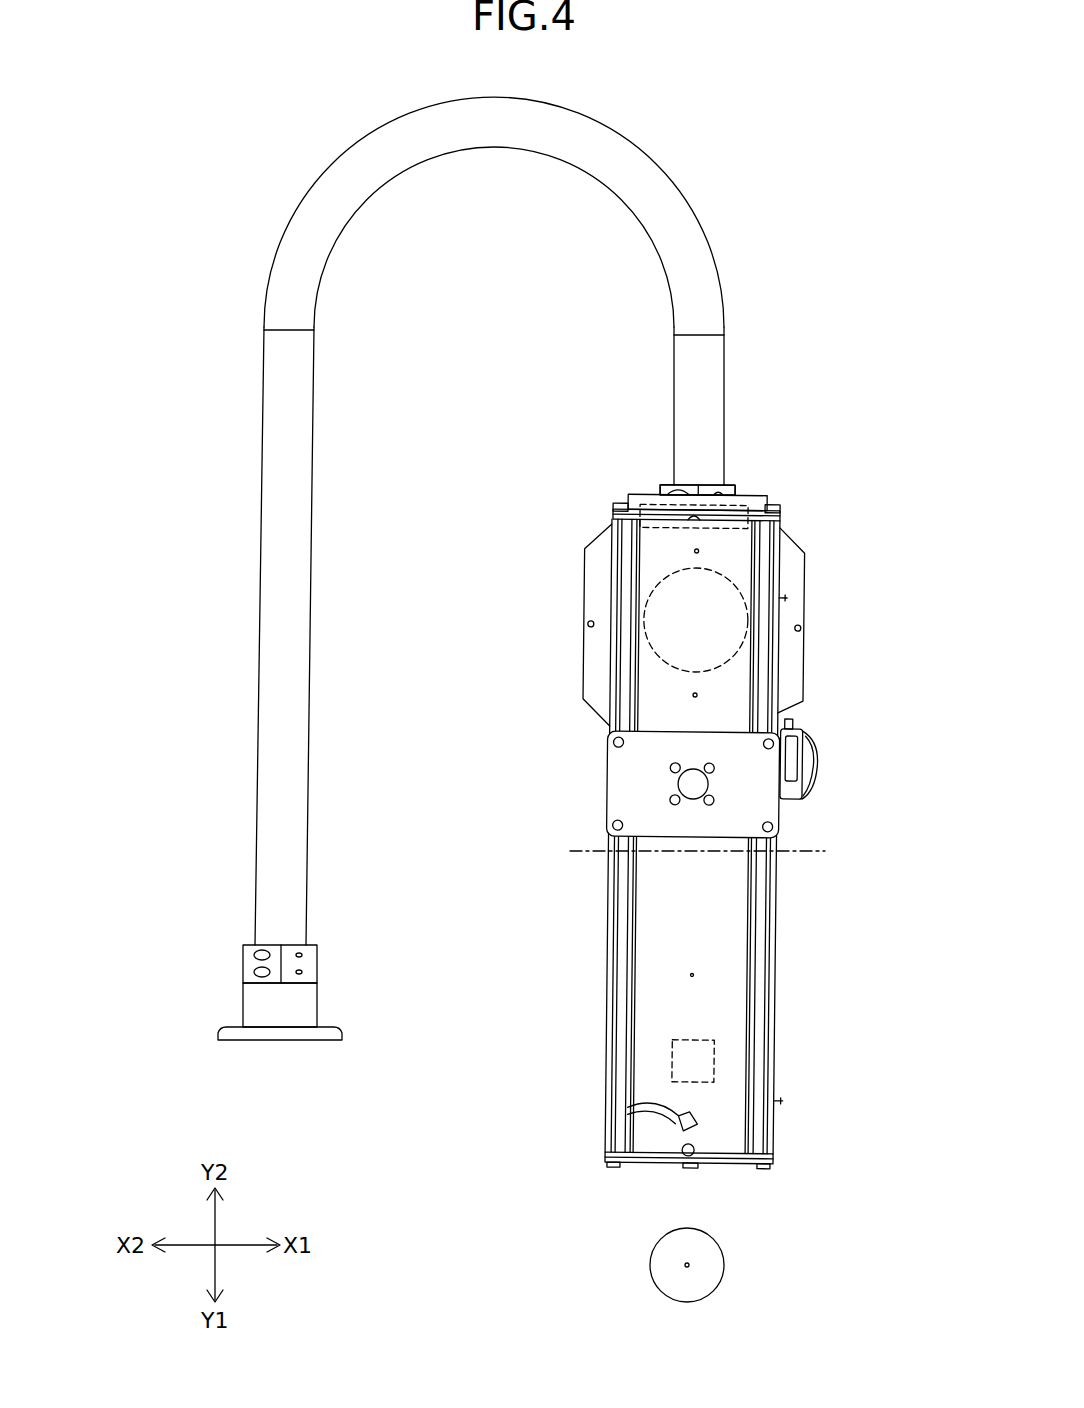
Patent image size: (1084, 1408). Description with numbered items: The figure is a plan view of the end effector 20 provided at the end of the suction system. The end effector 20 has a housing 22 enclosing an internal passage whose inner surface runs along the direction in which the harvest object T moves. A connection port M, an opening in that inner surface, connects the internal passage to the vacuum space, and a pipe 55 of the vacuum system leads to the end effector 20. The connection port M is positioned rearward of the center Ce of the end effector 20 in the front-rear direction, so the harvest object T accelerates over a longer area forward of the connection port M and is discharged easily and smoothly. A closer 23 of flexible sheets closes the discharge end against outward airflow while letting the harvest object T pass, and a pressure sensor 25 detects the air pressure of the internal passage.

The end effector 20 is at (733, 827).
The housing 22 is at (727, 1016).
The closer 23 is at (737, 498).
The pressure sensor 25 is at (720, 1064).
The pipe 55 is at (268, 674).
The connection port M is at (731, 658).
The center Ce is at (718, 852).
The harvest object T is at (700, 1303).